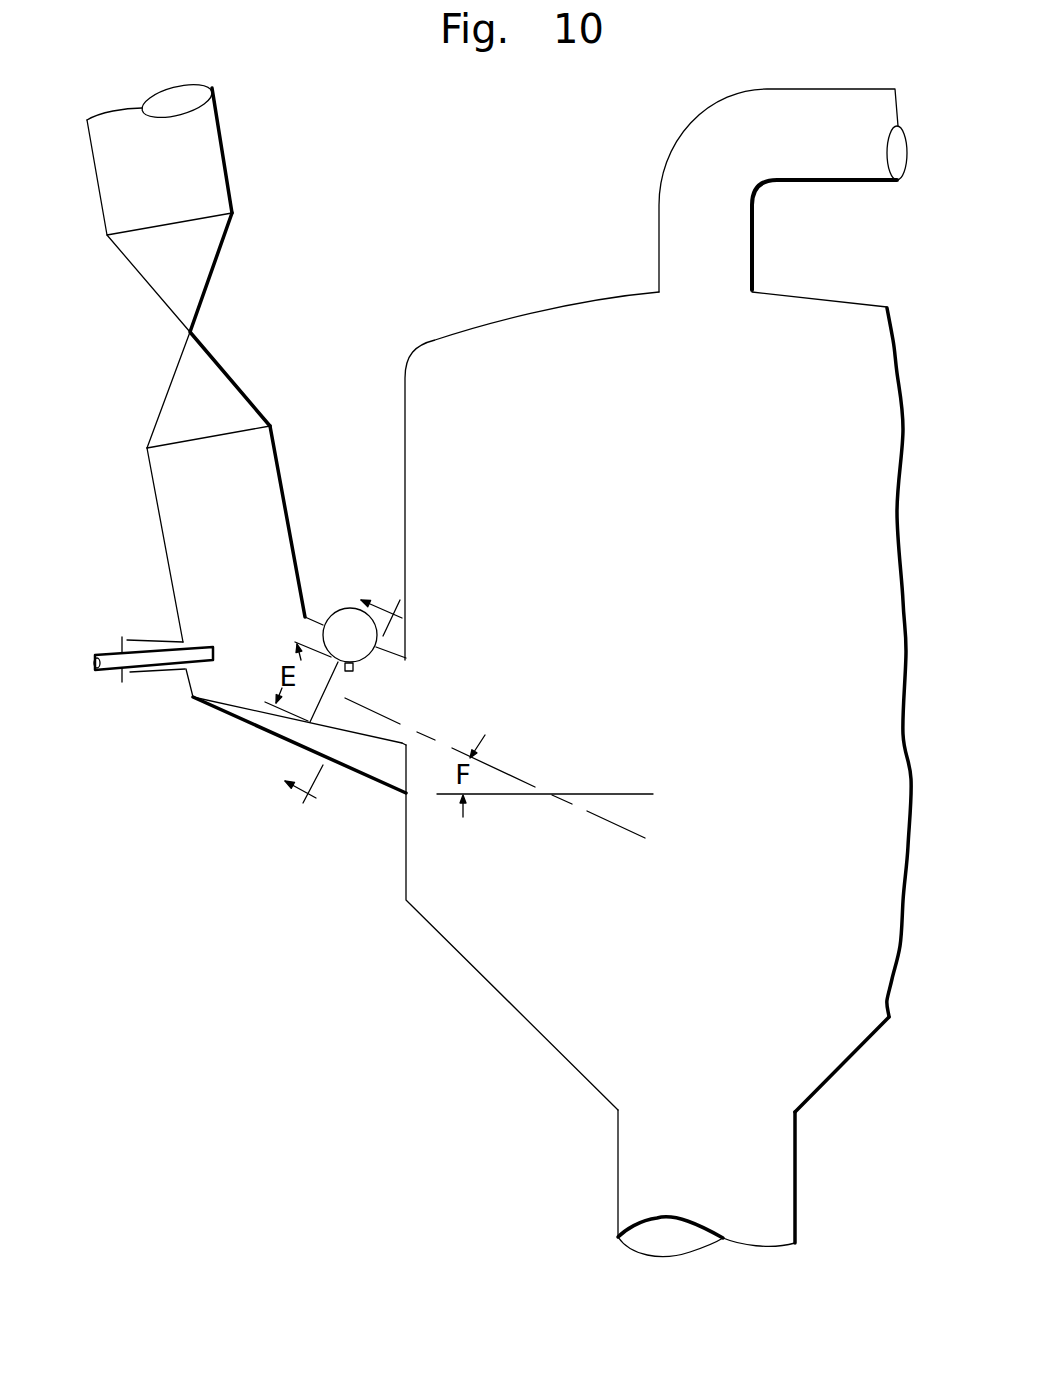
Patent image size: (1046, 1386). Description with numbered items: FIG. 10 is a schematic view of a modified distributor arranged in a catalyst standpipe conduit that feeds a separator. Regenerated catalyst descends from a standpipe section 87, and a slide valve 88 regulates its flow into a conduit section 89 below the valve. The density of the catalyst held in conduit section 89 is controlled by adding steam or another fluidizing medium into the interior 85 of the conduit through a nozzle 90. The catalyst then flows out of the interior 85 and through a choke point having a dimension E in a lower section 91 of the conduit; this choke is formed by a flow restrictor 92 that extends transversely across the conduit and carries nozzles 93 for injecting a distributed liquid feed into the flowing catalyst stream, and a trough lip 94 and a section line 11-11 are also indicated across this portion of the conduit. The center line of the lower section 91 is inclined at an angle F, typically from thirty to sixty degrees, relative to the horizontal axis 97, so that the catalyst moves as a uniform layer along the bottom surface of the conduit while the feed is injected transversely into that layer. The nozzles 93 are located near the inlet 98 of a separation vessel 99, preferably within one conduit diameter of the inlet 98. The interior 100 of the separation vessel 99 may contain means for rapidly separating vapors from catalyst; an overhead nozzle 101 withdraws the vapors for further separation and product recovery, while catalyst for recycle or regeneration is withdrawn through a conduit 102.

The section line 11- 11 is at (320, 687).
The interior 85 is at (255, 533).
The standpipe section 87 is at (227, 172).
The slide valve 88 is at (227, 372).
The conduit section 89 is at (277, 452).
The nozzle 90 is at (102, 653).
The lower section of the conduit 91 is at (257, 728).
The flow restrictor 92 is at (338, 633).
The nozzles 93 is at (354, 667).
The trough lip 94 is at (397, 736).
The horizontal axis 97 is at (622, 793).
The inlet 98 is at (383, 705).
The separation vessel 99 is at (406, 863).
The interior 100 is at (647, 665).
The overhead nozzle 101 is at (840, 181).
The conduit 102 is at (797, 1187).